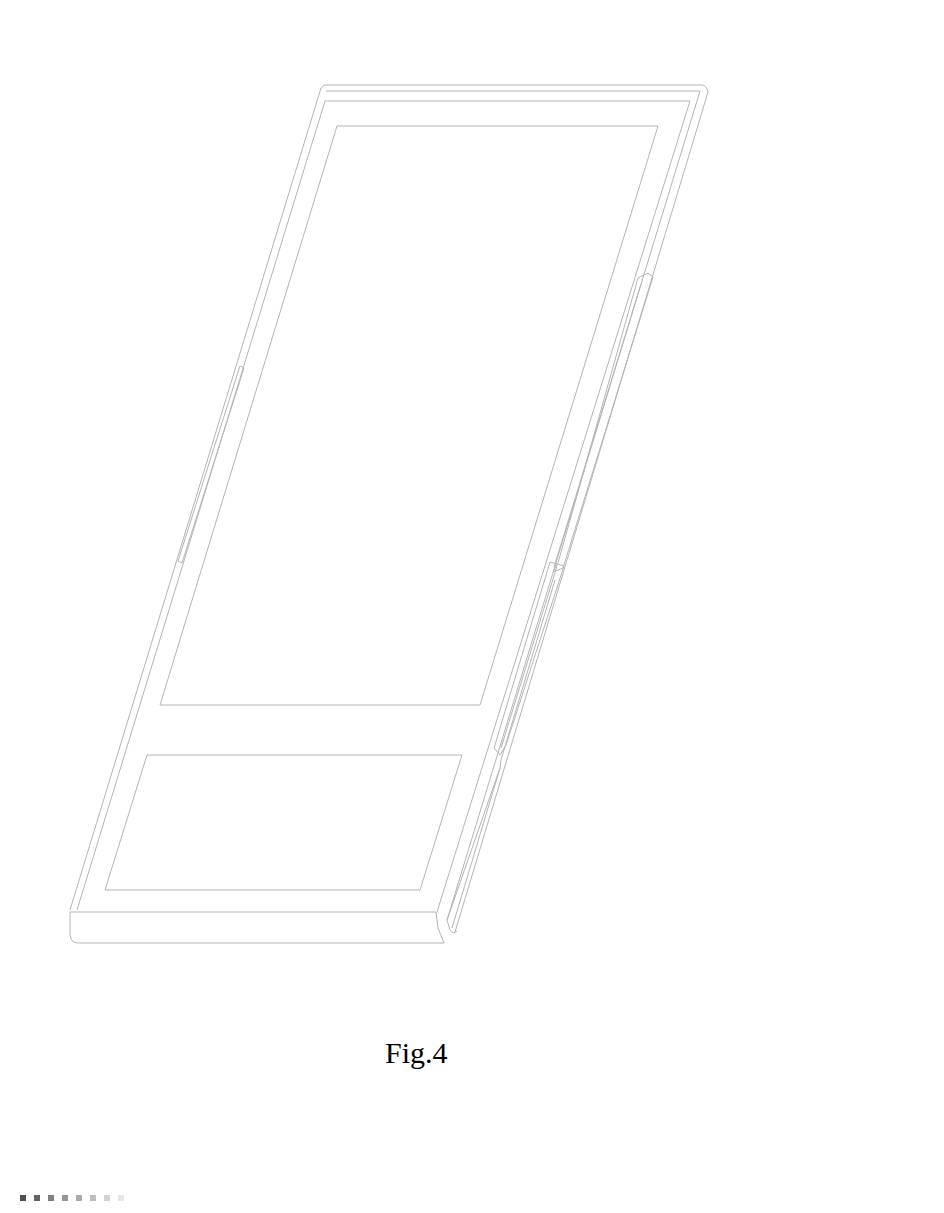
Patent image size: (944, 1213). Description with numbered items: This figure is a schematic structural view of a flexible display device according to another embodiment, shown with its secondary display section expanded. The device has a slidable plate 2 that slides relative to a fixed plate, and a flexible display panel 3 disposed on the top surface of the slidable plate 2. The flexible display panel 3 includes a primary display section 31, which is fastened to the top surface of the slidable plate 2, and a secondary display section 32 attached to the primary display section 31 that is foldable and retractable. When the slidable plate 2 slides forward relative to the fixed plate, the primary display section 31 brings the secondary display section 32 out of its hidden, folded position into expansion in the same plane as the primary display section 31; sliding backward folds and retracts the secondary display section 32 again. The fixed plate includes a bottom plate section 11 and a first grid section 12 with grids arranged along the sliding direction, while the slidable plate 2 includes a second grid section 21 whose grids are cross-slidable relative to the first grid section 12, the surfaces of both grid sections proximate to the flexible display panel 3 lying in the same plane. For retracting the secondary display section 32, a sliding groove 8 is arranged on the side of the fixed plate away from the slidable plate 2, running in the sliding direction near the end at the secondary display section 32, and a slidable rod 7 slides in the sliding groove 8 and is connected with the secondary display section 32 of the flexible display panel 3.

The slidable plate 2 is at (692, 122).
The flexible display panel 3 is at (437, 112).
The primary display section 31 is at (395, 220).
The secondary display section 32 is at (155, 827).
The second grid section 21 is at (587, 460).
The first grid section 12 is at (532, 630).
The bottom plate section 11 is at (526, 695).
The sliding groove 8 is at (477, 851).
The slidable rod 7 is at (452, 932).